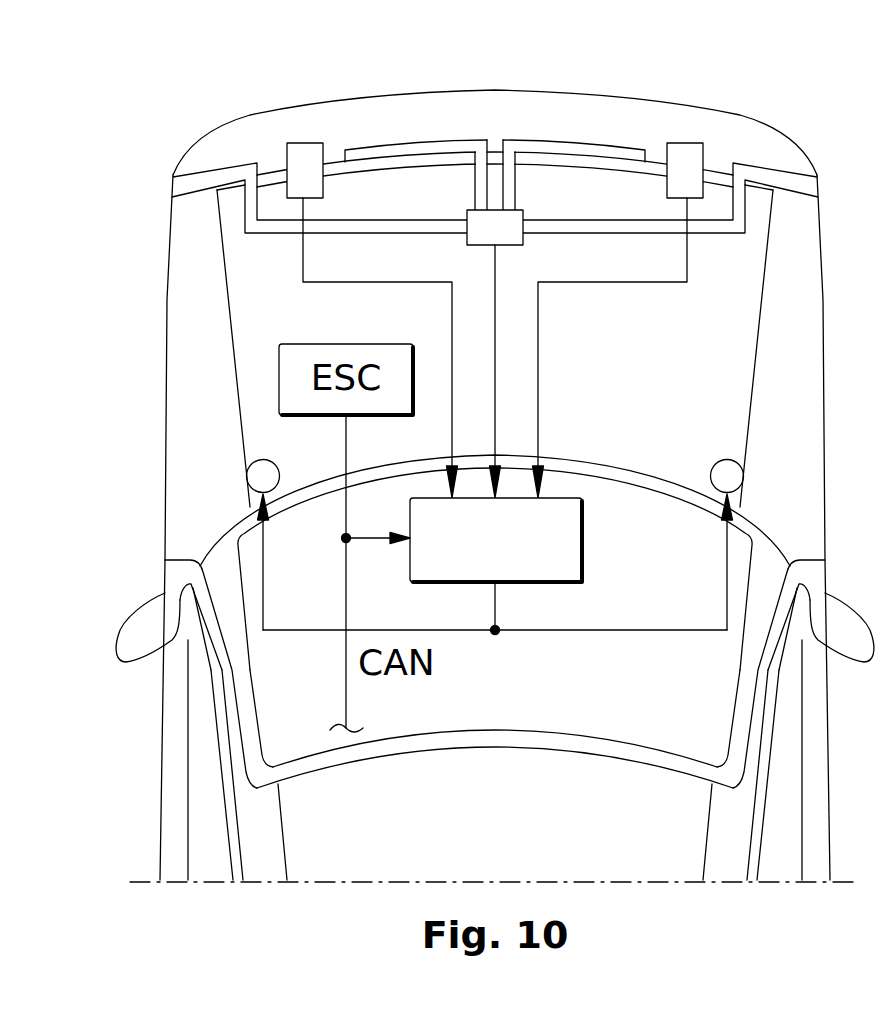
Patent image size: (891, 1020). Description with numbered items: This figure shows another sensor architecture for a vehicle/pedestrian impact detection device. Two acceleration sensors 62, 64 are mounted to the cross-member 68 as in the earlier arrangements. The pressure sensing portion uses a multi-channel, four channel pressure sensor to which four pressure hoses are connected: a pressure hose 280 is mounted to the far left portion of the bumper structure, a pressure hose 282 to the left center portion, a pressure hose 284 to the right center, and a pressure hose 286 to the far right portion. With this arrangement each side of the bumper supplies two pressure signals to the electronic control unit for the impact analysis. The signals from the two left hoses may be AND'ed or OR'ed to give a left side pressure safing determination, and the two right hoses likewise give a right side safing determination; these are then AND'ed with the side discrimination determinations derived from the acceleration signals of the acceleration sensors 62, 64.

The acceleration sensor 62 is at (303, 143).
The acceleration sensor 64 is at (687, 143).
The cross-member 68 is at (557, 163).
The pressure hose 280 is at (228, 178).
The pressure hose 282 is at (383, 153).
The pressure hose 284 is at (527, 140).
The pressure hose 286 is at (758, 173).